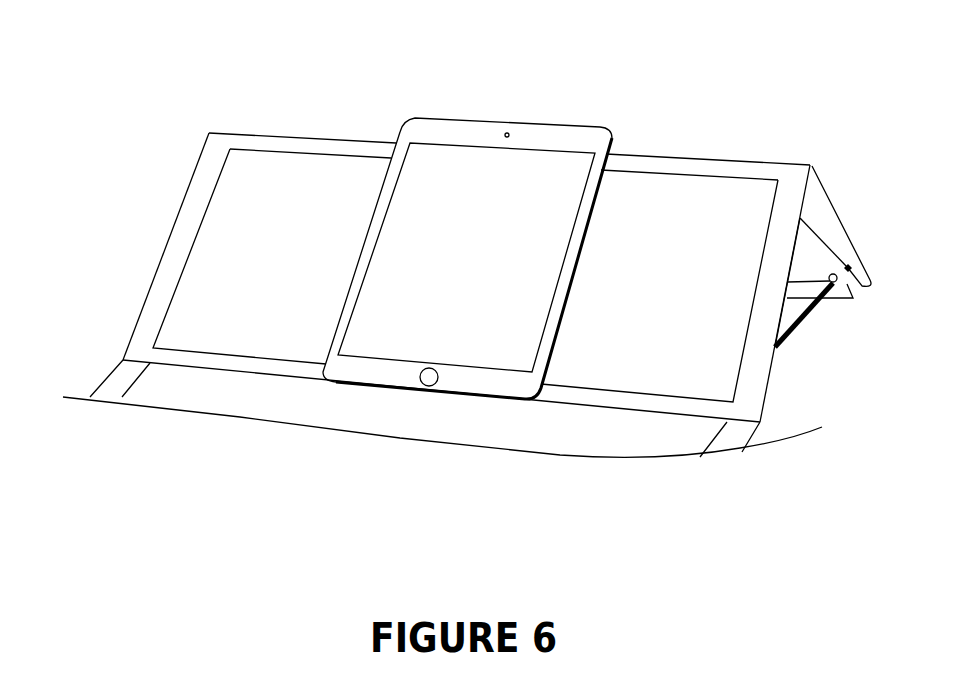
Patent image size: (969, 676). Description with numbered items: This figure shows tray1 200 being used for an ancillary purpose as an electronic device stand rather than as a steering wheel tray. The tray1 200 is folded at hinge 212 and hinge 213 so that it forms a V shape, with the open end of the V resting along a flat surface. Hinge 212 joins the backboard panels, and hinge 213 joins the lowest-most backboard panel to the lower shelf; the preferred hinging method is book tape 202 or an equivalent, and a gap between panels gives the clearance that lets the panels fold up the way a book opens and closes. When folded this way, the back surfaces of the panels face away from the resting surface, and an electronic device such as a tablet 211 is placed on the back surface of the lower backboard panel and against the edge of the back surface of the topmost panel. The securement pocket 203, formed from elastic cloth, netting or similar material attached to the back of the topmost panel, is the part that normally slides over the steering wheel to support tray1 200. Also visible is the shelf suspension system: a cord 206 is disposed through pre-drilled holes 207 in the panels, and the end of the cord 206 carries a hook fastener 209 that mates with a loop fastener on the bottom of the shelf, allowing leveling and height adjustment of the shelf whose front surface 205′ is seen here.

The tray1 200 is at (417, 55).
The book tape 202 is at (786, 178).
The securement pocket 203 is at (213, 388).
The front surface of lower shelf panel 205′ is at (805, 272).
The cord 206 is at (800, 305).
The pre-drilled hole 207 is at (838, 281).
The hook fastener 209 is at (850, 263).
The tablet 211 is at (478, 243).
The hinge 212 is at (125, 360).
The hinge 213 is at (209, 133).